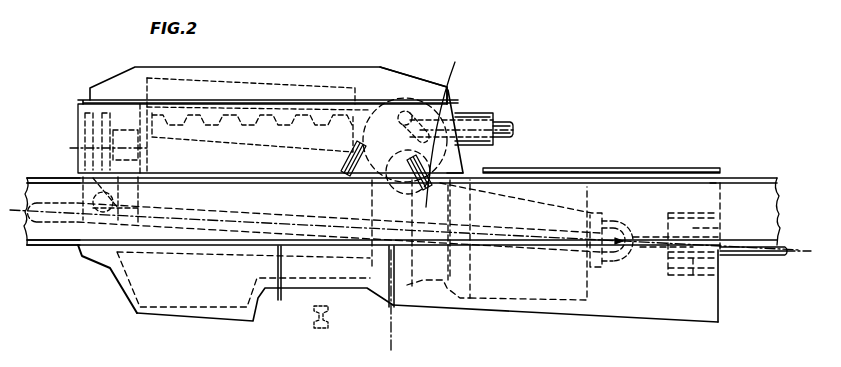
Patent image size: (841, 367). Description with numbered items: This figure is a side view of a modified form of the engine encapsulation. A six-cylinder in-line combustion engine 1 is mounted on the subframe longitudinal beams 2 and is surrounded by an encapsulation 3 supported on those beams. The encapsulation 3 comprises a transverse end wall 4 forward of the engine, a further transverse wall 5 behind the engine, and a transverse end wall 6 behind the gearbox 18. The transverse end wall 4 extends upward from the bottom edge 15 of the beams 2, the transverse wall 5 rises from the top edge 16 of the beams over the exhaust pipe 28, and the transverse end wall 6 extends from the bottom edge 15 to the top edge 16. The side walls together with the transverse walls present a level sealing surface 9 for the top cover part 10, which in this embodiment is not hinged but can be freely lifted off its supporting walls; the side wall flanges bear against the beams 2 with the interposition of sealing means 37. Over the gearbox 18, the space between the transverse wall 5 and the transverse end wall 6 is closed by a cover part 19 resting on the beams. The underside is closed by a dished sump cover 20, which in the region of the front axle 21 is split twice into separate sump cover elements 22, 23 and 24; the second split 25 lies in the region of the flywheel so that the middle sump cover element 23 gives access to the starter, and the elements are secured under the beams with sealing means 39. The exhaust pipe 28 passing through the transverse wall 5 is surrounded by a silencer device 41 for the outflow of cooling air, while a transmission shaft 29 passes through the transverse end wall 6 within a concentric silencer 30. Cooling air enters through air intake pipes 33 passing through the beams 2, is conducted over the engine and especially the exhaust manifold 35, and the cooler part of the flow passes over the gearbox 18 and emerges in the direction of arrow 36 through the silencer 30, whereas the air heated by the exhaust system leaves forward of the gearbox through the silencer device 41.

The combustion engine 1 is at (339, 82).
The subframe longitudinal beam 2 is at (757, 190).
The encapsulation 3 is at (273, 62).
The transverse end wall 4 is at (71, 119).
The transverse wall 5 is at (466, 162).
The transverse end wall 6 is at (725, 302).
The sealing surface 9 is at (371, 103).
The top cover part 10 is at (408, 82).
The bottom edge 15 is at (50, 246).
The top edge 16 is at (48, 176).
The gearbox 18 is at (555, 218).
The cover part 19 is at (622, 170).
The sump cover 20 is at (156, 329).
The front axle 21 is at (328, 318).
The sump cover element 22 is at (143, 285).
The sump cover element 23 is at (302, 286).
The sump cover element 24 is at (612, 302).
The second split 25 is at (393, 336).
The exhaust pipe 28 is at (500, 122).
The transmission shaft 29 is at (772, 256).
The silencer 30 is at (696, 278).
The air intake pipe 33 is at (103, 214).
The exhaust manifold 35 is at (304, 104).
The arrow 36 is at (693, 228).
The sealing means 37 is at (448, 125).
The sealing means 39 is at (500, 252).
The silencer device 41 is at (478, 113).